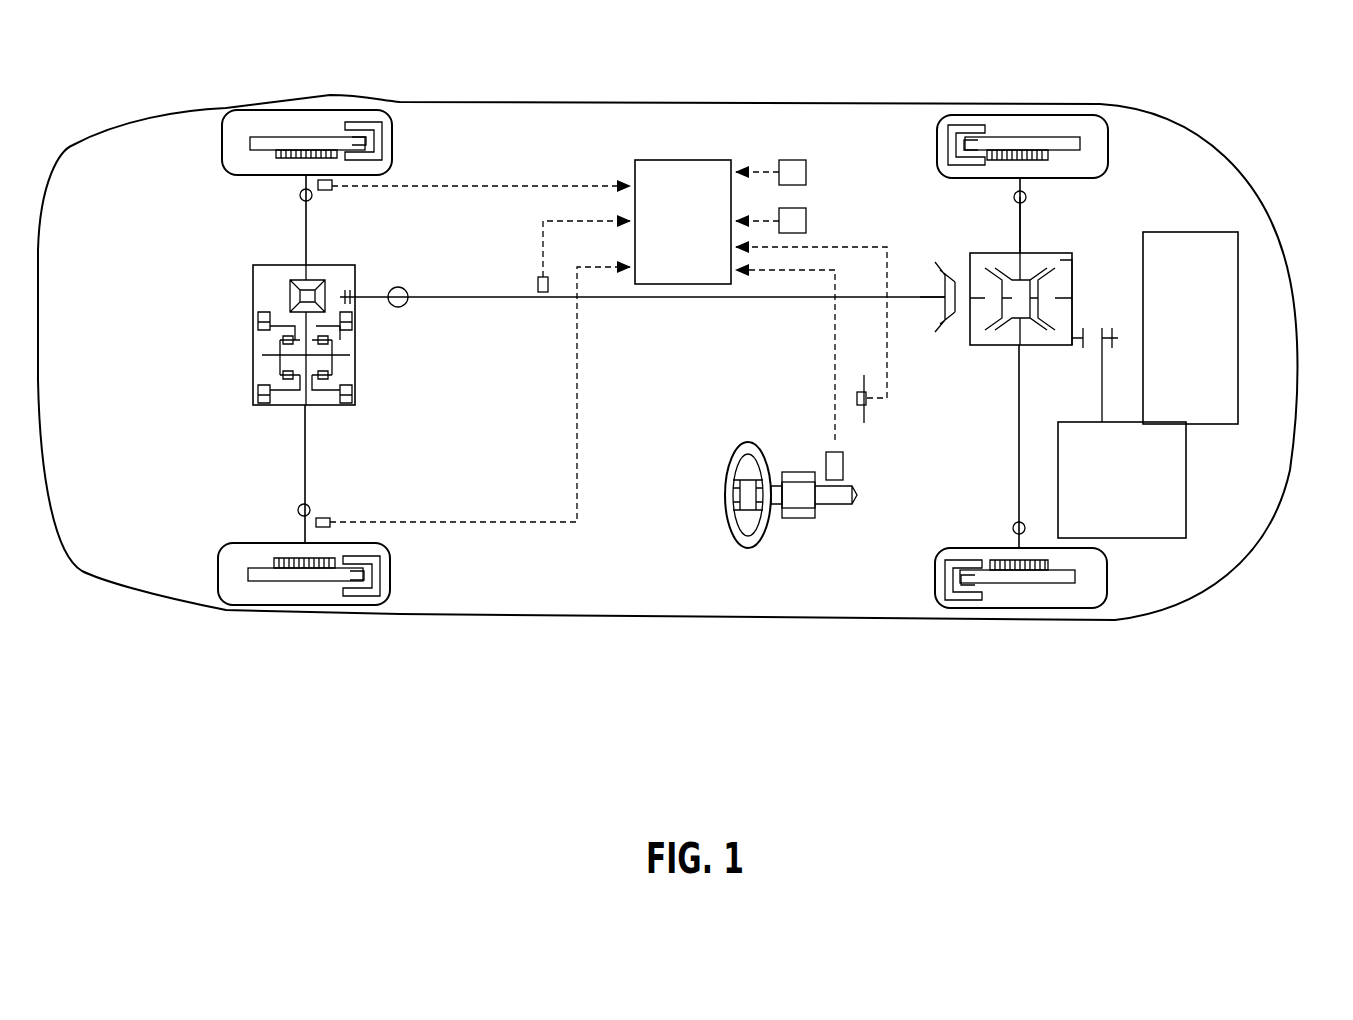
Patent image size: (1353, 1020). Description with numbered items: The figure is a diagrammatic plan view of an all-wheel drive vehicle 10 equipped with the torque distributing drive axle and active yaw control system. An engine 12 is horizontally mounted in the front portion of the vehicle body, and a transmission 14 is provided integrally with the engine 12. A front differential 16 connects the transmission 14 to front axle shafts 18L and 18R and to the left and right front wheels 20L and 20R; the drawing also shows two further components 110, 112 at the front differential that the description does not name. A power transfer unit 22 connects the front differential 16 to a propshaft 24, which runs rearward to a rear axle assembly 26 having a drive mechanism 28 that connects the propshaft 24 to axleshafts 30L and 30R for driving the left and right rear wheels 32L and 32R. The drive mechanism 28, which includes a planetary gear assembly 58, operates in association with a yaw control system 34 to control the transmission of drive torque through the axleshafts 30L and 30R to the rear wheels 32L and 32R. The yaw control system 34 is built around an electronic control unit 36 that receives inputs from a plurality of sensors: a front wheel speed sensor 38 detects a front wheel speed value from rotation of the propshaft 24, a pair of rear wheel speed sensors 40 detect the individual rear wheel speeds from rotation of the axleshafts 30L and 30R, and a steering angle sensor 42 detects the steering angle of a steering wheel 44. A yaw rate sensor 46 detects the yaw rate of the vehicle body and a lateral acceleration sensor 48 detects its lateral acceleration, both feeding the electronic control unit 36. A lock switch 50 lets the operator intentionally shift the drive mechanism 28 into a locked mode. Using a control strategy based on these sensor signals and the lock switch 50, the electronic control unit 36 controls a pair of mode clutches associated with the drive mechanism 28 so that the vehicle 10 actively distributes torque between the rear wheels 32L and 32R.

The all-wheel drive vehicle 10 is at (866, 635).
The engine 12 is at (1228, 315).
The transmission 14 is at (1172, 485).
The front differential 16 is at (997, 372).
The front axle shaft 18L is at (1019, 222).
The front axle shaft 18R is at (1019, 478).
The left front wheel 20L is at (1100, 115).
The right front wheel 20R is at (1097, 610).
The power transfer unit 22 is at (935, 262).
The propshaft 24 is at (683, 307).
The rear axle assembly 26 is at (378, 478).
The drive mechanism 28 is at (243, 345).
The axleshaft 30L is at (306, 222).
The axleshaft 30R is at (305, 475).
The left rear wheel 32L is at (390, 110).
The right rear wheel 32R is at (390, 605).
The yaw control system 34 is at (712, 153).
The electronic control unit 36 is at (680, 158).
The front wheel speed sensor 38 is at (538, 282).
The rear wheel speed sensor 40 is at (325, 190).
The steering angle sensor 42 is at (843, 465).
The steering wheel 44 is at (735, 522).
The yaw rate sensor 46 is at (806, 221).
The lateral acceleration sensor 48 is at (806, 172).
The lock switch 50 is at (857, 398).
The planetary gear assembly 58 is at (376, 300).
The differential output shaft 110 is at (1090, 270).
The differential output shaft 112 is at (1057, 253).